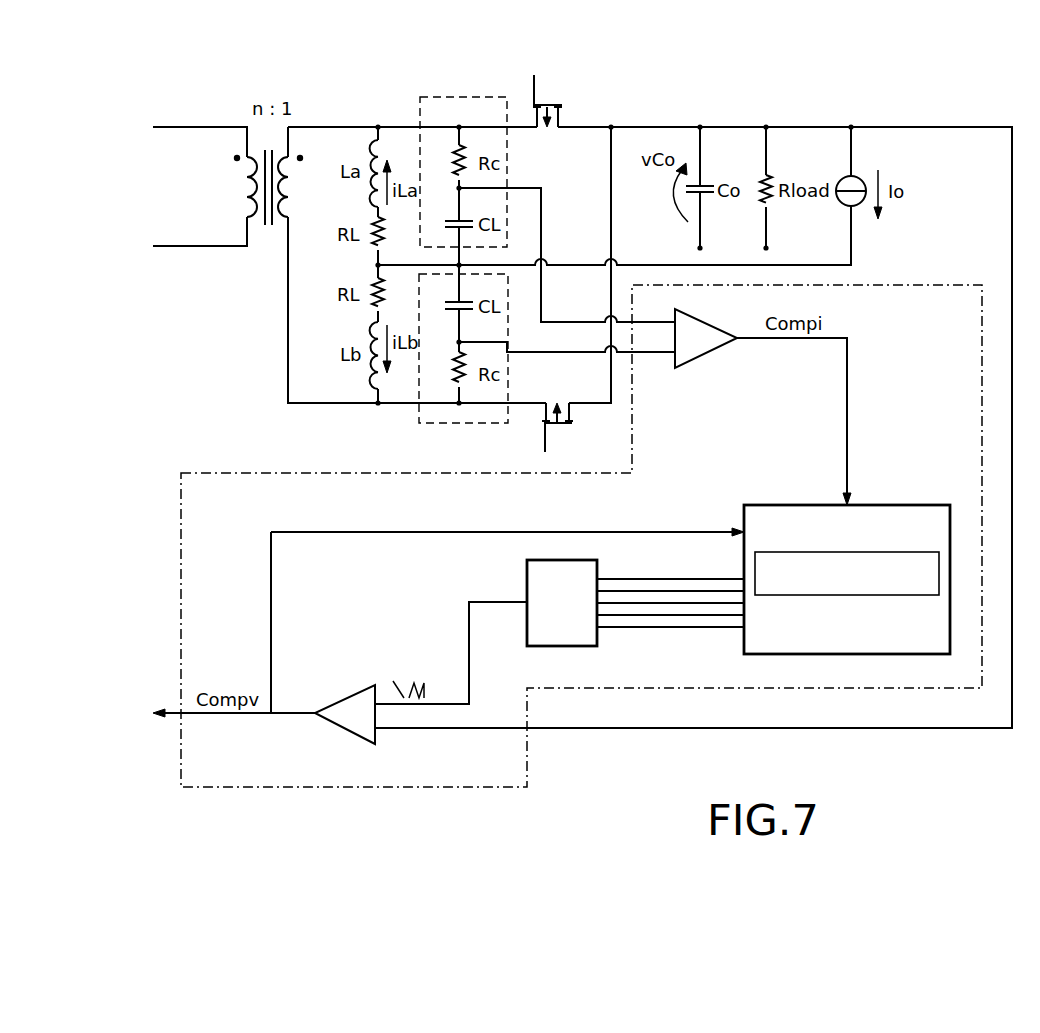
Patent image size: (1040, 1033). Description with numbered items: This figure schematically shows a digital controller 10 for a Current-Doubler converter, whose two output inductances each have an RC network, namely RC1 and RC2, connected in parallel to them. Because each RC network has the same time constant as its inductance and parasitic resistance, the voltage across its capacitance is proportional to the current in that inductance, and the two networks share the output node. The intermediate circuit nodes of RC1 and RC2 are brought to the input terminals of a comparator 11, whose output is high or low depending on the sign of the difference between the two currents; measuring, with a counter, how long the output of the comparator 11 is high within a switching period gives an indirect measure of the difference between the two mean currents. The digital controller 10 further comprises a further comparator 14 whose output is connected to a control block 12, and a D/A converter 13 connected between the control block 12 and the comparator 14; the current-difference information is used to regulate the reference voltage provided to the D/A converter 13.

The digital controller 10 is at (222, 473).
The comparator 11 is at (698, 331).
The control block 12 is at (893, 523).
The D/A converter 13 is at (556, 572).
The further comparator 14 is at (346, 728).
The RC network RC1 is at (456, 97).
The RC network RC2 is at (446, 423).